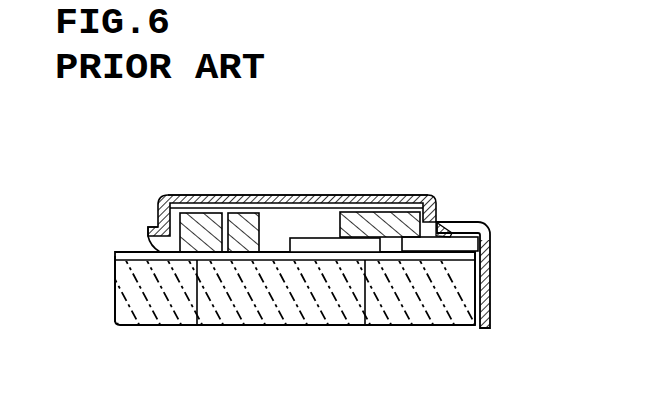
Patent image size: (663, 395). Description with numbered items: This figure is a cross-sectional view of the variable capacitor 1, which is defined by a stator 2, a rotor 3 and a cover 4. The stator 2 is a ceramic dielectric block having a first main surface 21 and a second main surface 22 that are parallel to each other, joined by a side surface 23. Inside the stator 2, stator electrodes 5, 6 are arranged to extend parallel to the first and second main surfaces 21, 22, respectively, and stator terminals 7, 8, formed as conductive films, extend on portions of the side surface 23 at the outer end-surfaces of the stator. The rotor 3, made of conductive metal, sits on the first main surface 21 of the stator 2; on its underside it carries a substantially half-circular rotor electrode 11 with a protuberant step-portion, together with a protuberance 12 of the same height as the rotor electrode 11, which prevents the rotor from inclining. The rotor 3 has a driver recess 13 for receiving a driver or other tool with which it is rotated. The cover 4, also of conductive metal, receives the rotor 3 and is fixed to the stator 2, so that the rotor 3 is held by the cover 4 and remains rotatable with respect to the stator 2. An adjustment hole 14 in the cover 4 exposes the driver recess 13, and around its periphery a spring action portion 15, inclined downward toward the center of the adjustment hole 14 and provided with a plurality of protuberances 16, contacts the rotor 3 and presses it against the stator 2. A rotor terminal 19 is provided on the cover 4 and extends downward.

The variable capacitor 1 is at (105, 167).
The stator 2 is at (272, 328).
The rotor 3 is at (333, 195).
The cover 4 is at (433, 194).
The stator electrode 5 is at (192, 326).
The stator electrode 6 is at (367, 326).
The stator terminal 7 is at (115, 292).
The stator terminal 8 is at (470, 326).
The rotor electrode 11 is at (222, 213).
The protuberance 12 is at (484, 237).
The driver recess 13 is at (303, 206).
The adjustment hole 14 is at (240, 195).
The spring action portion 15 is at (198, 194).
The protuberances 16 is at (266, 232).
The rotor terminal 19 is at (492, 292).
The first main surface 21 is at (157, 248).
The second main surface 22 is at (408, 326).
The side surface 23 is at (492, 287).